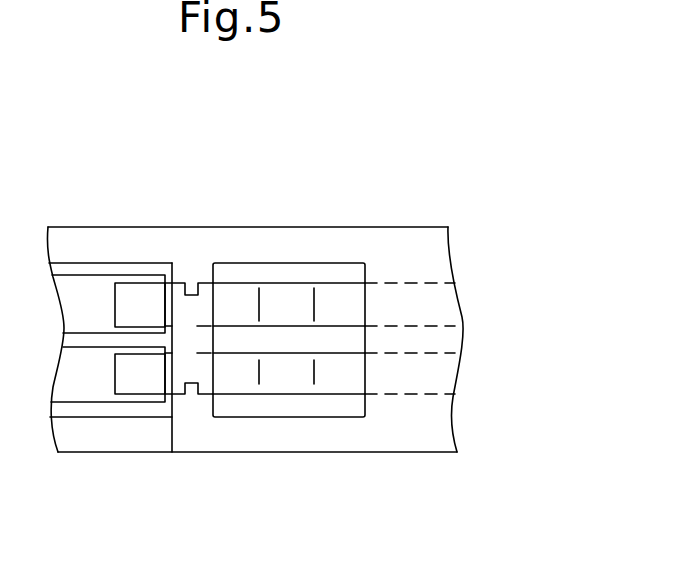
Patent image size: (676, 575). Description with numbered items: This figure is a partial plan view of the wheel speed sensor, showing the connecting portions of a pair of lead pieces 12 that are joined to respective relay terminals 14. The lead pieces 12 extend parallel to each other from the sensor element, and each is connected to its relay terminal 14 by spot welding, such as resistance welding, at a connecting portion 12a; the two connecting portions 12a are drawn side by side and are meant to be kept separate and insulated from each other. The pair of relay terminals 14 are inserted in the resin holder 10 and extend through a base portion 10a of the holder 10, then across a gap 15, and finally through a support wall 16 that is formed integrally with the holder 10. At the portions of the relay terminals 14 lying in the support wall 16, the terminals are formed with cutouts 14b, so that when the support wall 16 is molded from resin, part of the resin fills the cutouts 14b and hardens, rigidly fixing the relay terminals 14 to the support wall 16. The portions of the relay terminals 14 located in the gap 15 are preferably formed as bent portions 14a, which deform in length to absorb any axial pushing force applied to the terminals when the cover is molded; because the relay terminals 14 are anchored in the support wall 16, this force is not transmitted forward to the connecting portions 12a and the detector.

The holder 10 is at (243, 247).
The base portion 10a is at (420, 262).
The lead pieces 12 is at (73, 377).
The connecting portions 12a is at (143, 305).
The relay terminals 14 is at (415, 305).
The bent portion 14a is at (283, 383).
The cutouts 14b is at (193, 293).
The gap 15 is at (318, 407).
The support wall 16 is at (200, 372).